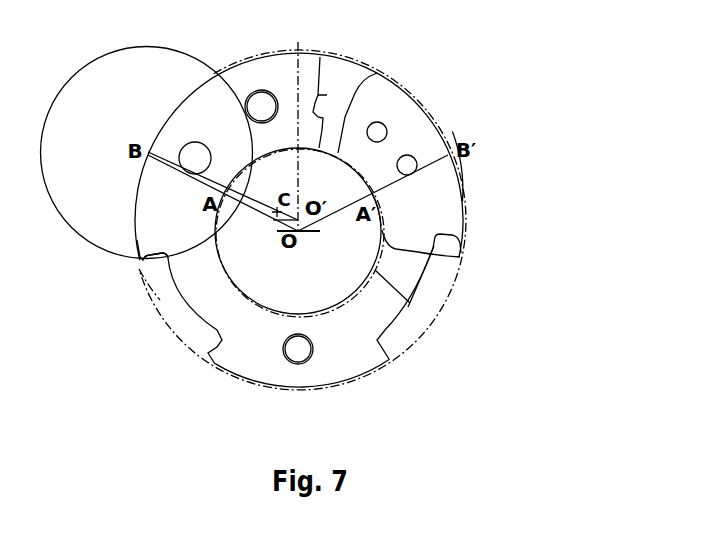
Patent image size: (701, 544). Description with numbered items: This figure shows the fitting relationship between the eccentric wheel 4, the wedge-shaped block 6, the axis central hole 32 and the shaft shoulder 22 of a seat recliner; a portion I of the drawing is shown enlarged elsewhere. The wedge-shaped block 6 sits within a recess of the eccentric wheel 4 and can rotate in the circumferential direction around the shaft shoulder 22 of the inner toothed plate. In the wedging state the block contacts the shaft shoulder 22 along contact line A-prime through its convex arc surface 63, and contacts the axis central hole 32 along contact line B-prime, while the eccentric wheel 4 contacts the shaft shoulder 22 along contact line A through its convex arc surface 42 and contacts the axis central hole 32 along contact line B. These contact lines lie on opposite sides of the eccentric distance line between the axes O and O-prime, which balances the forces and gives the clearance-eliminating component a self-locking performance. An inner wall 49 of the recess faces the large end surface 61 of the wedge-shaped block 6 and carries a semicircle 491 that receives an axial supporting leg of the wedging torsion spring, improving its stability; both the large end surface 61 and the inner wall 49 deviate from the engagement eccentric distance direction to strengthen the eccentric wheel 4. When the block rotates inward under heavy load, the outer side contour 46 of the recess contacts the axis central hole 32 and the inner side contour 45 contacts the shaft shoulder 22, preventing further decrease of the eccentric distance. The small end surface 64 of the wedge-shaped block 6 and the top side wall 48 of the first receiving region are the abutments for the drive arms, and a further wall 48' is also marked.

The eccentric wheel 4 is at (210, 292).
The portion I is at (90, 65).
The convex arc surface 42 is at (204, 166).
The semicircle 491 is at (320, 57).
The inner wall 49 is at (327, 95).
The large end surface 61 is at (353, 95).
The wedge-shaped block 6 is at (392, 112).
The outer side contour 46 is at (457, 173).
The convex arc surface 63 is at (376, 197).
The tab 48' is at (492, 243).
The inner side contour 45 is at (460, 257).
The small end surface 64 is at (414, 254).
The shaft shoulder 22 is at (377, 262).
The top side wall 48 is at (126, 269).
The axis central hole 32 is at (147, 282).